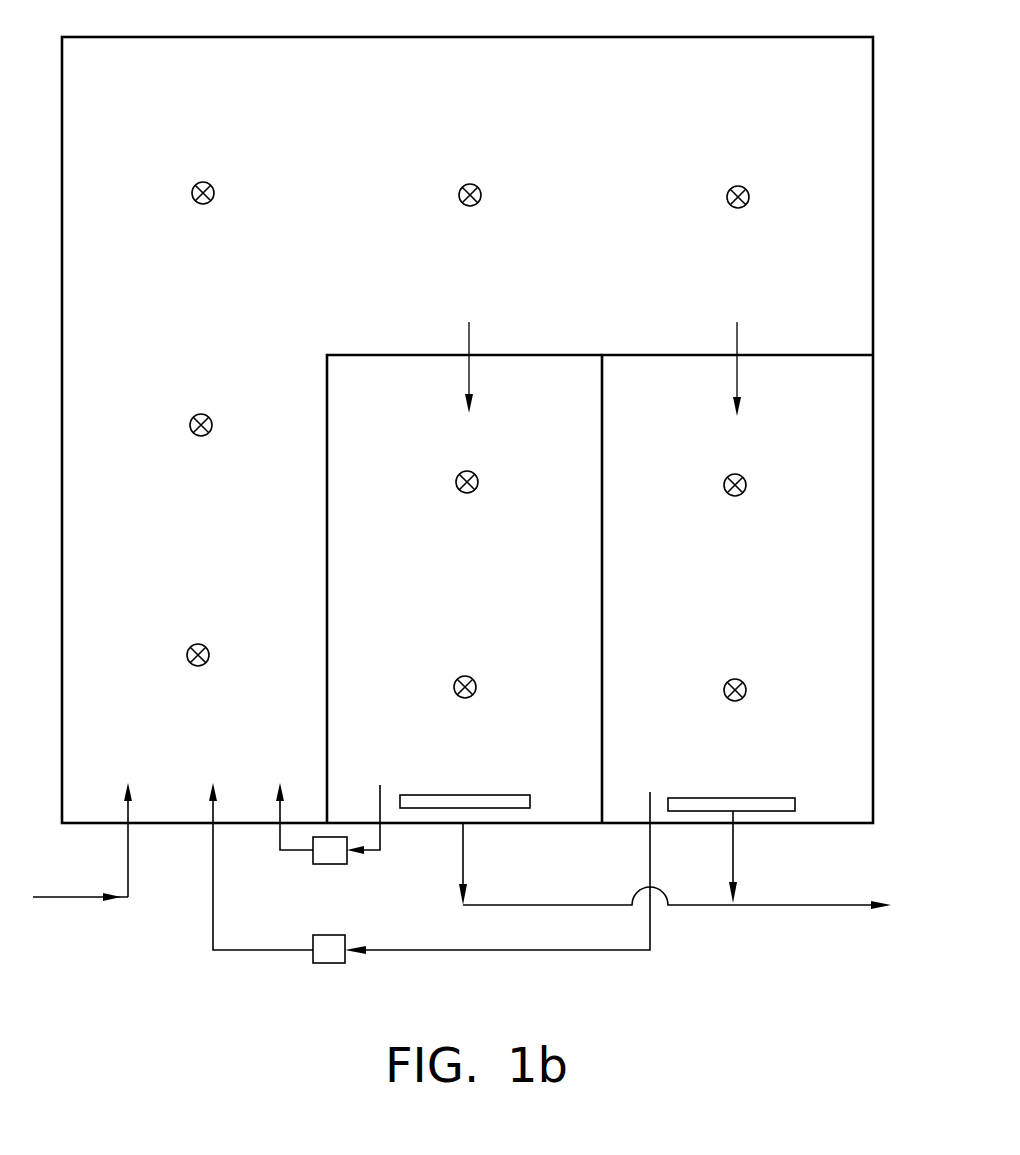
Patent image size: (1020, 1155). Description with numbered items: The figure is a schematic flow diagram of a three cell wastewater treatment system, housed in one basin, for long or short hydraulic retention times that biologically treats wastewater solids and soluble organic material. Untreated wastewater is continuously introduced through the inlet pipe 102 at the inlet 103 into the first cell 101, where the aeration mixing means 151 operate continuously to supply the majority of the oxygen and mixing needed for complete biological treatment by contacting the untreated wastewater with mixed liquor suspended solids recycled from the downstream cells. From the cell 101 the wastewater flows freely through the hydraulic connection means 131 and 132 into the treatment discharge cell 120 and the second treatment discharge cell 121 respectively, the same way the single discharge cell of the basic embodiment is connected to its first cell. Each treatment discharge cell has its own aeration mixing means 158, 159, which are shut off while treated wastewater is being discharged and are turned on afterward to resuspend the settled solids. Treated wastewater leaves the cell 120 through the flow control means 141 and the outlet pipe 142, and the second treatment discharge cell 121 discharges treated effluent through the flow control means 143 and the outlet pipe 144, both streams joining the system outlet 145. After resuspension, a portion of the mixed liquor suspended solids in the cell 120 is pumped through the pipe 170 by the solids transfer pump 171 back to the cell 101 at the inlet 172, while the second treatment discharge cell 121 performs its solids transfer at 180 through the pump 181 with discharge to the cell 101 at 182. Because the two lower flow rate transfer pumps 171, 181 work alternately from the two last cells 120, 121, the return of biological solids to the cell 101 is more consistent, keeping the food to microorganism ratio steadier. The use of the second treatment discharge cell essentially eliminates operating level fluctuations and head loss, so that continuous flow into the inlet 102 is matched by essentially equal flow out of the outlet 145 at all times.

The cell 101 is at (115, 789).
The inlet pipe 102 is at (83, 902).
The inlet 103 is at (125, 824).
The treatment discharge cell 120 is at (590, 794).
The second treatment discharge cell 121 is at (850, 799).
The hydraulic connection means 131 is at (470, 362).
The hydraulic connection means 132 is at (738, 368).
The flow control means 141 is at (517, 810).
The outlet pipe 142 is at (465, 872).
The flow control means 143 is at (785, 825).
The outlet pipe 144 is at (735, 875).
The outlet 145 is at (820, 910).
The aeration mixing means 151 is at (203, 204).
The aeration mixing means 158 is at (467, 493).
The aeration mixing means 159 is at (735, 496).
The pipe 170 is at (382, 817).
The solids transfer pump 171 is at (313, 866).
The inlet 172 is at (273, 815).
The solids transfer 180 is at (660, 827).
The pump 181 is at (313, 965).
The discharge 182 is at (210, 815).